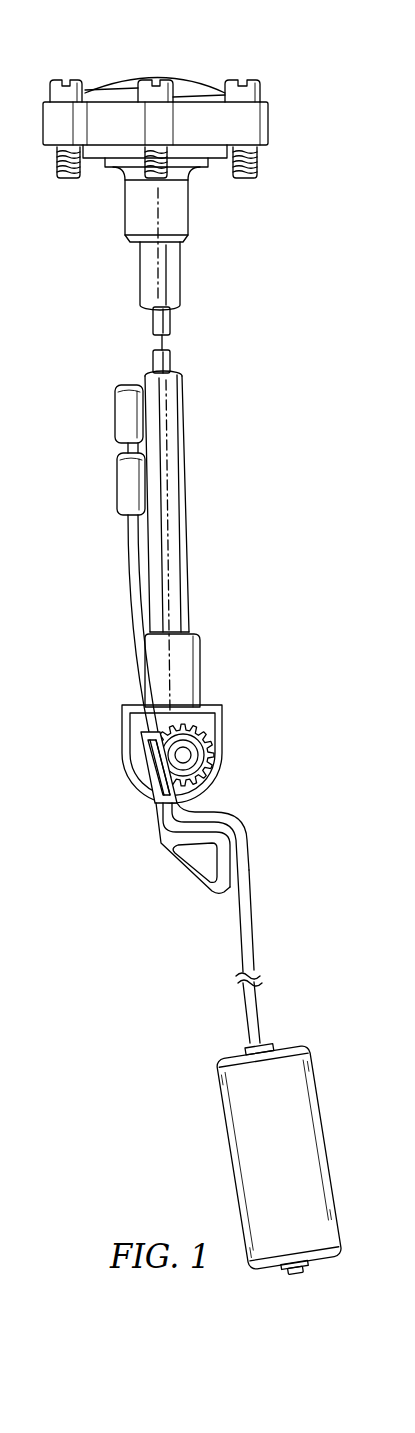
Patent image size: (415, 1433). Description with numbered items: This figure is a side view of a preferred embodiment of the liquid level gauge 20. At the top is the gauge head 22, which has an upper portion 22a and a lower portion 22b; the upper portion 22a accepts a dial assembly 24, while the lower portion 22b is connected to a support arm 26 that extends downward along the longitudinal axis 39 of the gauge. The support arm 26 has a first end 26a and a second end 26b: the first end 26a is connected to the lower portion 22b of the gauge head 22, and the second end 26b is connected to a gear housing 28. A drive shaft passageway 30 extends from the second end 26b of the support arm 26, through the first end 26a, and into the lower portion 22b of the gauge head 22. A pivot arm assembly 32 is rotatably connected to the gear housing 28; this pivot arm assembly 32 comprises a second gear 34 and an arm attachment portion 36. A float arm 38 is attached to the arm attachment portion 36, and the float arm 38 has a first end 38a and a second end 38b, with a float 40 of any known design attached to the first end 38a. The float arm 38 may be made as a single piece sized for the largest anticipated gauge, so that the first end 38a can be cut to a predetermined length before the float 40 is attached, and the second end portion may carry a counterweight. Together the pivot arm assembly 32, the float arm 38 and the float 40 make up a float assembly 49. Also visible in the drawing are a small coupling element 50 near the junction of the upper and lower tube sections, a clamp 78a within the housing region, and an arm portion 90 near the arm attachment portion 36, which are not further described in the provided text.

The liquid level gauge 20 is at (72, 422).
The gauge head 22 is at (196, 62).
The upper portion 22a is at (270, 118).
The lower portion 22b is at (125, 222).
The dial assembly 24 is at (130, 78).
The support arm 26 is at (188, 522).
The first end 26a is at (182, 278).
The second end 26b is at (192, 620).
The gear housing 28 is at (200, 670).
The drive shaft passageway 30 is at (152, 318).
The pivot arm assembly 32 is at (308, 738).
The second gear 34 is at (212, 728).
The arm attachment portion 36 is at (147, 866).
The float arm 38 is at (258, 950).
The first end 38a is at (252, 1027).
The second end 38b is at (127, 533).
The longitudinal axis 39 is at (167, 448).
The float 40 is at (227, 1160).
The float assembly 49 is at (143, 974).
The coupling pin 50 is at (172, 363).
The cable clamp 78a is at (122, 732).
The bracket arm 90 is at (229, 833).